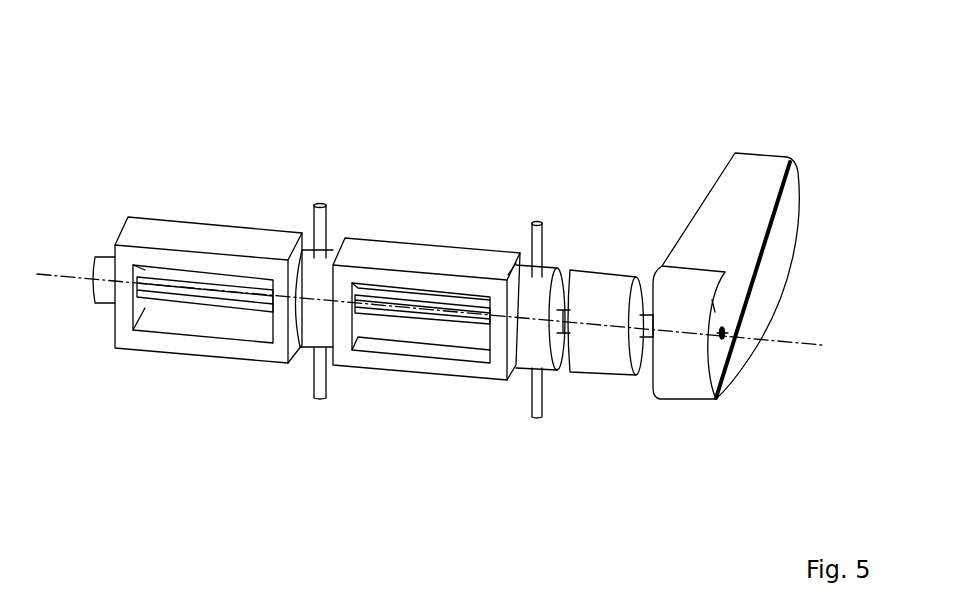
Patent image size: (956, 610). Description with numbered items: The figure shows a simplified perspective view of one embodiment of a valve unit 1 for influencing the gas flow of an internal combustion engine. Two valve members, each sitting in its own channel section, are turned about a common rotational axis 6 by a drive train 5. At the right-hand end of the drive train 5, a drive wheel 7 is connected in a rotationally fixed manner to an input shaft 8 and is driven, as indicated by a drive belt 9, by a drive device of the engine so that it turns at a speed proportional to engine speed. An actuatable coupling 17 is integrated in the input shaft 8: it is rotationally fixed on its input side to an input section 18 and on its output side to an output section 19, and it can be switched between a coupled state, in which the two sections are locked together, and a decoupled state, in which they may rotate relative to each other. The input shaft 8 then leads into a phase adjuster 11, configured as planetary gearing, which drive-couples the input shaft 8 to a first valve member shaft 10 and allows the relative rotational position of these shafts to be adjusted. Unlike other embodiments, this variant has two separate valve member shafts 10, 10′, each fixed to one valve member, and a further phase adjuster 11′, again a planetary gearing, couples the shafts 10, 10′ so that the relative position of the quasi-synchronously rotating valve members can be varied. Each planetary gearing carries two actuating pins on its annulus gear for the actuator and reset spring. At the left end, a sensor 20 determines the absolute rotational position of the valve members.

The valve unit 1 is at (187, 121).
The drive train 5 is at (720, 348).
The rotational axis 6 is at (70, 278).
The drive wheel 7 is at (722, 310).
The input shaft 8 is at (650, 313).
The drive belt 9 is at (752, 165).
The valve member shaft 10 is at (455, 300).
The second valve member shaft 10′ is at (235, 273).
The phase adjuster 11 is at (553, 266).
The further phase adjuster 11′ is at (336, 248).
The coupling 17 is at (608, 282).
The input section 18 is at (647, 340).
The output section 19 is at (556, 370).
The sensor 20 is at (102, 297).